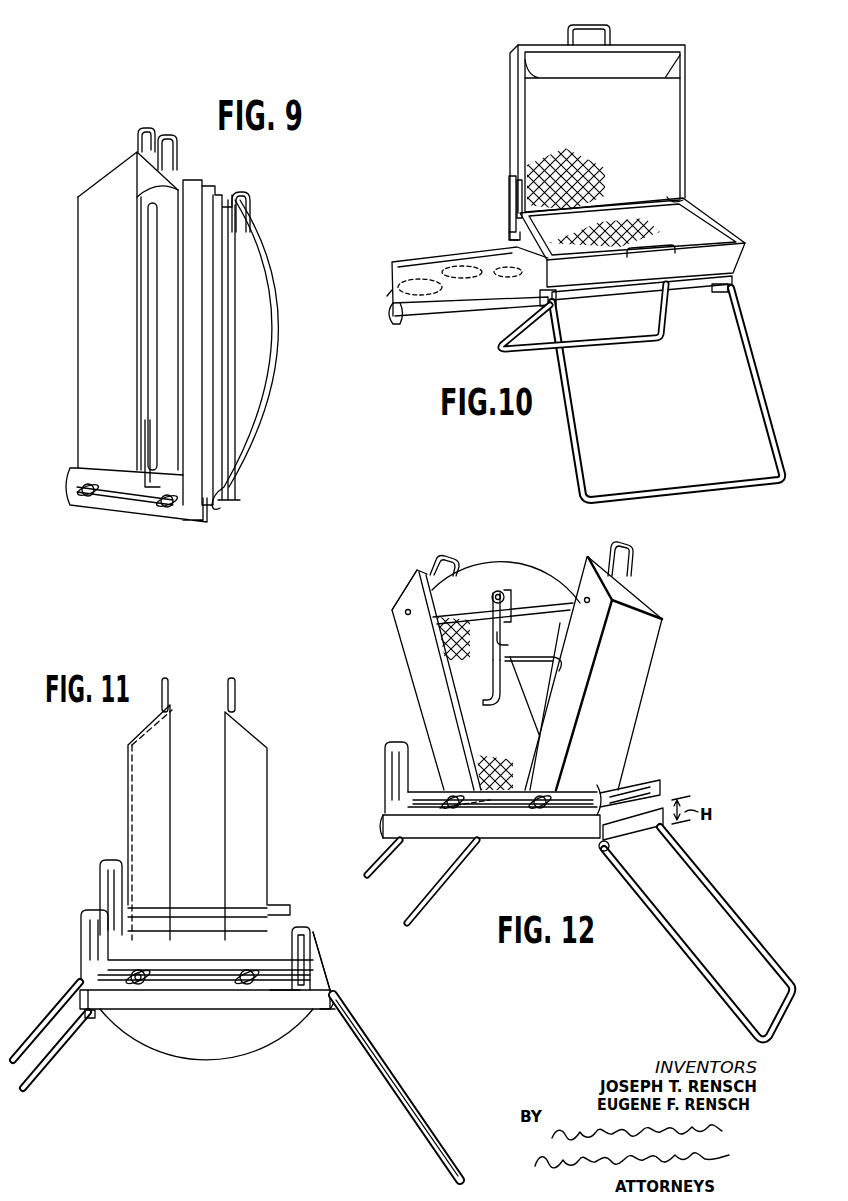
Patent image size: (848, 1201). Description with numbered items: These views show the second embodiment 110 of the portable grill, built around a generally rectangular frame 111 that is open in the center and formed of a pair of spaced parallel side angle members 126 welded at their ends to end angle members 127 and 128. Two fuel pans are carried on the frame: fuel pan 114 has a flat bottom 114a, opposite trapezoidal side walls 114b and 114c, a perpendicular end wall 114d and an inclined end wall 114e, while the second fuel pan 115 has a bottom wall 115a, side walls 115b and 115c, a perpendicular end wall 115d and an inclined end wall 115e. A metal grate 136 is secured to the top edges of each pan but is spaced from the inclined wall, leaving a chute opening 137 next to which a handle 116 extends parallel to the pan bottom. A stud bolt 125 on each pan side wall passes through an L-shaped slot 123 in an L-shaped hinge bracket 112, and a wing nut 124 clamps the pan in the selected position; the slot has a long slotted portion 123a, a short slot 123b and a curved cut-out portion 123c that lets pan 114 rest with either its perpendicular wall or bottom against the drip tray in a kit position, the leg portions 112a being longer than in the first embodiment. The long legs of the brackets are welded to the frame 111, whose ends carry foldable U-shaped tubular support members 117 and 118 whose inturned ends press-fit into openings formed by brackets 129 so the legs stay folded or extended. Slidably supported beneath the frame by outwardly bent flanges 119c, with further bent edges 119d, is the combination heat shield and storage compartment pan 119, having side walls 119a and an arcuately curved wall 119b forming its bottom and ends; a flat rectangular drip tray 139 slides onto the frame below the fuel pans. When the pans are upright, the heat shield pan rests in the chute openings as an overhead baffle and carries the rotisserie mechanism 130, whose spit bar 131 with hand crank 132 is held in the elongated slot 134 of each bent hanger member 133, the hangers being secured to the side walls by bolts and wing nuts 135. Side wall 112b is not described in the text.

In FIG. 9, the second embodiment 110 is at (71, 340).
In FIG. 9, the frame 111 is at (226, 171).
In FIG. 11, the frame 111 is at (323, 937).
In FIG. 11, the L-shaped hinge bracket 112 is at (81, 920).
In FIG. 12, the L-shaped hinge bracket 112 is at (623, 783).
In FIG. 9, the leg portion 112a is at (107, 505).
In FIG. 12, the leg portion 112a is at (392, 758).
In FIG. 9, the base channel end 112b is at (146, 204).
In FIG. 9, the fuel pan 114 is at (106, 200).
In FIG. 11, the fuel pan 114 is at (133, 768).
In FIG. 11, the flat bottom 114a is at (128, 833).
In FIG. 10, the trapezoidal side wall 114b is at (516, 86).
In FIG. 11, the trapezoidal side wall 114b is at (140, 805).
In FIG. 12, the trapezoidal side wall 114b is at (415, 665).
In FIG. 10, the trapezoidal side wall 114c is at (686, 67).
In FIG. 12, the perpendicular end wall 114d is at (488, 821).
In FIG. 10, the inclined end wall 114e is at (660, 41).
In FIG. 12, the inclined end wall 114e is at (418, 572).
In FIG. 9, the second fuel pan 115 is at (184, 182).
In FIG. 11, the second fuel pan 115 is at (258, 776).
In FIG. 12, the bottom wall 115a is at (632, 687).
In FIG. 10, the side wall 115b is at (552, 275).
In FIG. 11, the side wall 115b is at (253, 831).
In FIG. 12, the side wall 115b is at (587, 657).
In FIG. 10, the side wall 115c is at (721, 231).
In FIG. 10, the perpendicular end wall 115d is at (667, 197).
In FIG. 10, the inclined end wall 115e is at (725, 265).
In FIG. 12, the inclined end wall 115e is at (641, 600).
In FIG. 9, the handle 116 is at (178, 156).
In FIG. 10, the handle 116 is at (568, 30).
In FIG. 11, the handle 116 is at (227, 692).
In FIG. 12, the handle 116 is at (447, 558).
In FIG. 9, the U-shaped tubular support member 117 is at (232, 480).
In FIG. 11, the U-shaped tubular support member 117 is at (353, 1026).
In FIG. 9, the U-shaped tubular support member 118 is at (252, 196).
In FIG. 11, the U-shaped tubular support member 118 is at (42, 1068).
In FIG. 12, the U-shaped tubular support member 118 is at (442, 881).
In FIG. 11, the heat shield-storage compartment pan 119 is at (190, 1044).
In FIG. 11, the side wall 119a is at (160, 1041).
In FIG. 12, the side wall 119a is at (496, 562).
In FIG. 10, the arcuately curved wall 119b is at (443, 317).
In FIG. 10, the outwardly bent flange 119c is at (424, 259).
In FIG. 11, the outwardly bent flange 119c is at (317, 952).
In FIG. 12, the outwardly bent flange 119c is at (503, 696).
In FIG. 10, the outwardly bent edge 119d is at (386, 266).
In FIG. 11, the outwardly bent edge 119d is at (305, 928).
In FIG. 11, the L-shaped slot 123 is at (108, 880).
In FIG. 9, the long slotted portion 123a is at (125, 502).
In FIG. 11, the long slotted portion 123a is at (202, 981).
In FIG. 9, the short slot 123b is at (148, 297).
In FIG. 9, the curved cut-out portion 123c is at (147, 485).
In FIG. 12, the curved cut-out portion 123c is at (418, 821).
In FIG. 11, the wing nut 124 is at (146, 982).
In FIG. 11, the stud bolt 125 is at (137, 988).
In FIG. 11, the side frame member 126 is at (278, 1001).
In FIG. 12, the side frame member 126 is at (637, 813).
In FIG. 10, the end frame member 127 is at (685, 283).
In FIG. 11, the end frame member 127 is at (329, 994).
In FIG. 12, the end frame member 127 is at (633, 828).
In FIG. 11, the end frame member 128 is at (76, 992).
In FIG. 12, the end frame member 128 is at (383, 833).
In FIG. 10, the bracket 129 is at (721, 293).
In FIG. 11, the bracket 129 is at (92, 1019).
In FIG. 12, the bracket 129 is at (604, 852).
In FIG. 12, the rotisserie mechanism 130 is at (519, 608).
In FIG. 12, the spit bar 131 is at (528, 656).
In FIG. 12, the hand crank 132 is at (493, 708).
In FIG. 12, the hanger member 133 is at (494, 626).
In FIG. 12, the elongated slot 134 is at (495, 642).
In FIG. 12, the bolt and wing nut 135 is at (502, 590).
In FIG. 10, the metal grate 136 is at (540, 143).
In FIG. 10, the chute opening 137 is at (522, 58).
In FIG. 12, the drip tray 139 is at (637, 787).